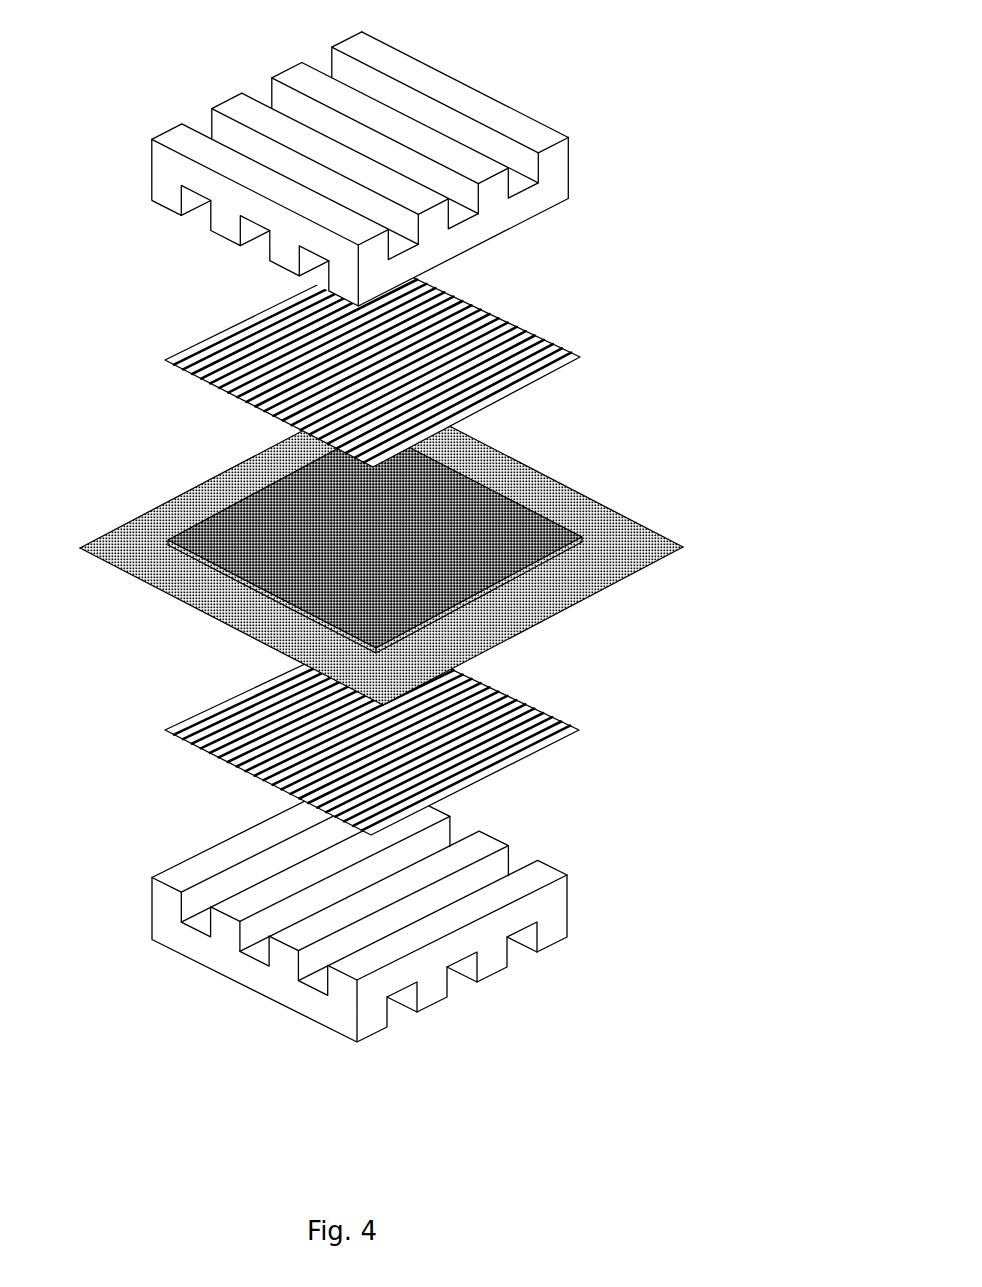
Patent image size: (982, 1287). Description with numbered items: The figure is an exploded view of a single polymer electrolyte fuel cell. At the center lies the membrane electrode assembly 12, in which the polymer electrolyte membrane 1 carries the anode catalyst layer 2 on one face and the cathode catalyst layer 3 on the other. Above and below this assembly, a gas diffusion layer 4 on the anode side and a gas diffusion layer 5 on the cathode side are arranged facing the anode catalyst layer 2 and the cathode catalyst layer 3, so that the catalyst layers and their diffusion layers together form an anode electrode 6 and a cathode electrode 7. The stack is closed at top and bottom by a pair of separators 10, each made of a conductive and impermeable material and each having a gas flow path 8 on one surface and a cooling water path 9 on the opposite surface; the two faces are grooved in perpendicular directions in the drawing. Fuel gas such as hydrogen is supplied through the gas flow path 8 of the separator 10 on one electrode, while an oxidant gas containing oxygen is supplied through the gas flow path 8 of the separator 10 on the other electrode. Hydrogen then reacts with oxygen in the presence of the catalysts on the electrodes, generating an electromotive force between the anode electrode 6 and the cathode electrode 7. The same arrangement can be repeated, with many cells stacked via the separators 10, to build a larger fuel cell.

The polymer electrolyte membrane 1 is at (751, 608).
The anode catalyst layer 2 is at (257, 525).
The cathode catalyst layer 3 is at (545, 613).
The gas diffusion layer 4 is at (572, 366).
The gas diffusion layer 5 is at (573, 732).
The anode electrode 6 is at (771, 308).
The cathode electrode 7 is at (772, 587).
The gas flow path 8 is at (412, 936).
The cooling water path 9 is at (457, 987).
The separator 10 is at (547, 907).
The membrane electrode assembly 12 is at (444, 547).